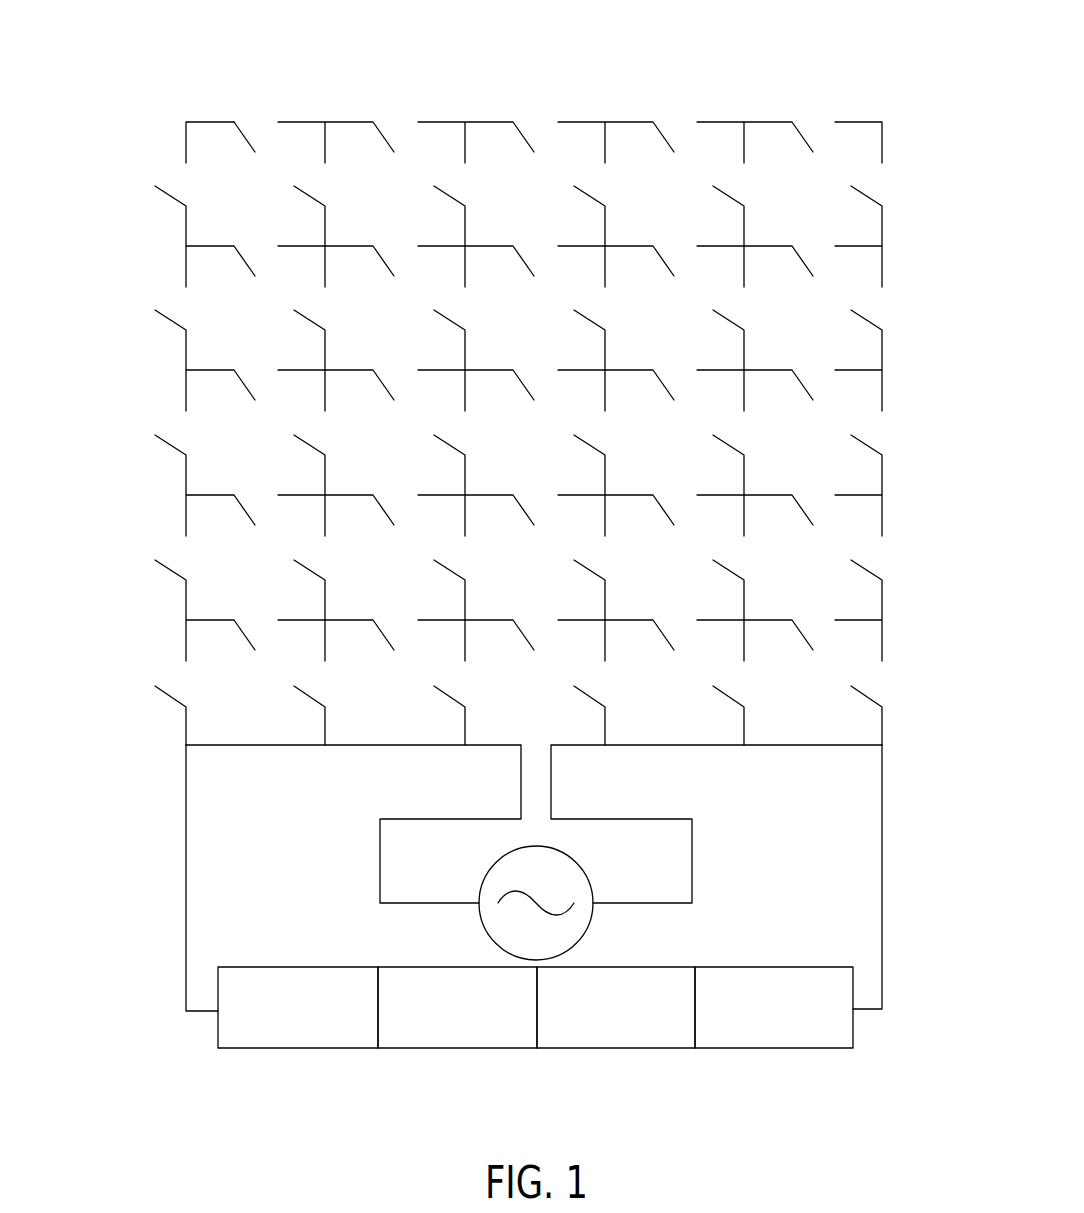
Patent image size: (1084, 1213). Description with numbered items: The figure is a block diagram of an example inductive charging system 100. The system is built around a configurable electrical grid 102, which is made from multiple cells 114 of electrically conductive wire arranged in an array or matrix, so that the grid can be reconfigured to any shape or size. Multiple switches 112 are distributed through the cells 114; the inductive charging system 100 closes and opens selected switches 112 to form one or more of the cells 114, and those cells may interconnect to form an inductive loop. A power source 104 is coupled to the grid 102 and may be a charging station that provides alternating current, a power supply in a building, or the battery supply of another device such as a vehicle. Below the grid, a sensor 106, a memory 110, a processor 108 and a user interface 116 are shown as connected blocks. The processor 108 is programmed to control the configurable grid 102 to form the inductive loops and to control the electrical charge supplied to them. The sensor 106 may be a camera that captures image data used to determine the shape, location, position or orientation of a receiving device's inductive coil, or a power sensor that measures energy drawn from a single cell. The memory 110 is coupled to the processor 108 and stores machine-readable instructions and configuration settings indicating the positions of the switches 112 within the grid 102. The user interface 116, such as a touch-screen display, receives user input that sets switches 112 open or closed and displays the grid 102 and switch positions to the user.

The inductive charging system 100 is at (102, 92).
The configurable electrical grid 102 is at (186, 142).
The power source 104 is at (903, 682).
The sensor 106 is at (298, 1040).
The processor 108 is at (617, 1040).
The memory 110 is at (457, 1040).
The switches 112 is at (243, 135).
The cells 114 is at (903, 121).
The user interface 116 is at (773, 1040).